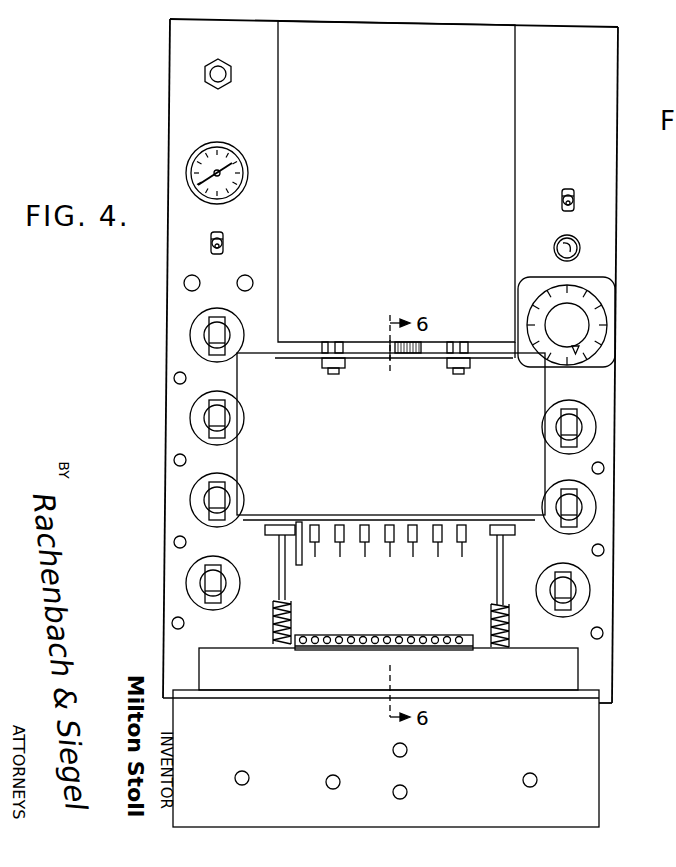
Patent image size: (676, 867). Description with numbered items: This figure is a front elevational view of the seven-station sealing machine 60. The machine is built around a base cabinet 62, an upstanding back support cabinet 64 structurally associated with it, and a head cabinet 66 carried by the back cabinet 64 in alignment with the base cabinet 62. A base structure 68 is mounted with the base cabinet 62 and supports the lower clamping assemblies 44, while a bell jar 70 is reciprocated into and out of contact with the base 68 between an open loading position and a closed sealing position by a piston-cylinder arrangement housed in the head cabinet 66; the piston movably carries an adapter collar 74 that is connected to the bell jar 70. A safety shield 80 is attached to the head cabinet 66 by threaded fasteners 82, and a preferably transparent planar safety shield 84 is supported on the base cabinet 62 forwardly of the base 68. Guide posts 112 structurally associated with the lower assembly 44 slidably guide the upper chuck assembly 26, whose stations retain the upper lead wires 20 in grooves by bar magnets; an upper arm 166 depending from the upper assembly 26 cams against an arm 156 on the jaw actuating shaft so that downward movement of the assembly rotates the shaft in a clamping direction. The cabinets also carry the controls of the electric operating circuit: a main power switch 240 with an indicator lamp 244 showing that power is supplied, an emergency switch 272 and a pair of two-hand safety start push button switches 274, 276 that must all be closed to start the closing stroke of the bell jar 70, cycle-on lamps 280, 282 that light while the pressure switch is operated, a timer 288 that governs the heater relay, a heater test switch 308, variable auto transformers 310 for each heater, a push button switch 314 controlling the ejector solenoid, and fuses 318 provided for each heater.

The upper lead wire 20 is at (318, 548).
The upper chuck assembly 26 is at (517, 537).
The lower clamping assembly 44 is at (481, 638).
The seven-station sealing machine 60 is at (634, 404).
The base cabinet 62 is at (600, 766).
The back support cabinet 64 is at (618, 163).
The head cabinet 66 is at (405, 170).
The base structure 68 is at (578, 668).
The bell jar 70 is at (240, 518).
The adapter collar 74 is at (393, 362).
The safety shield 80 is at (390, 442).
The threaded fasteners 82 is at (462, 374).
The planar safety shield 84 is at (588, 690).
The guide posts 112 is at (498, 587).
The arm 156 is at (300, 638).
The upper arm 166 is at (304, 562).
The main power switch 240 is at (212, 238).
The indicator lamp 244 is at (238, 48).
The emergency switch 272 is at (335, 774).
The two-hand safety start push button switch 274 is at (527, 773).
The two-hand safety start push button switch 276 is at (247, 770).
The cycle on lamp 280 is at (581, 247).
The cycle on lamp 282 is at (407, 792).
The timer 288 is at (606, 326).
The heater test switch 308 is at (575, 200).
The variable auto transformer 310 is at (190, 337).
The push button switch 314 is at (407, 750).
The fuse 318 is at (174, 378).